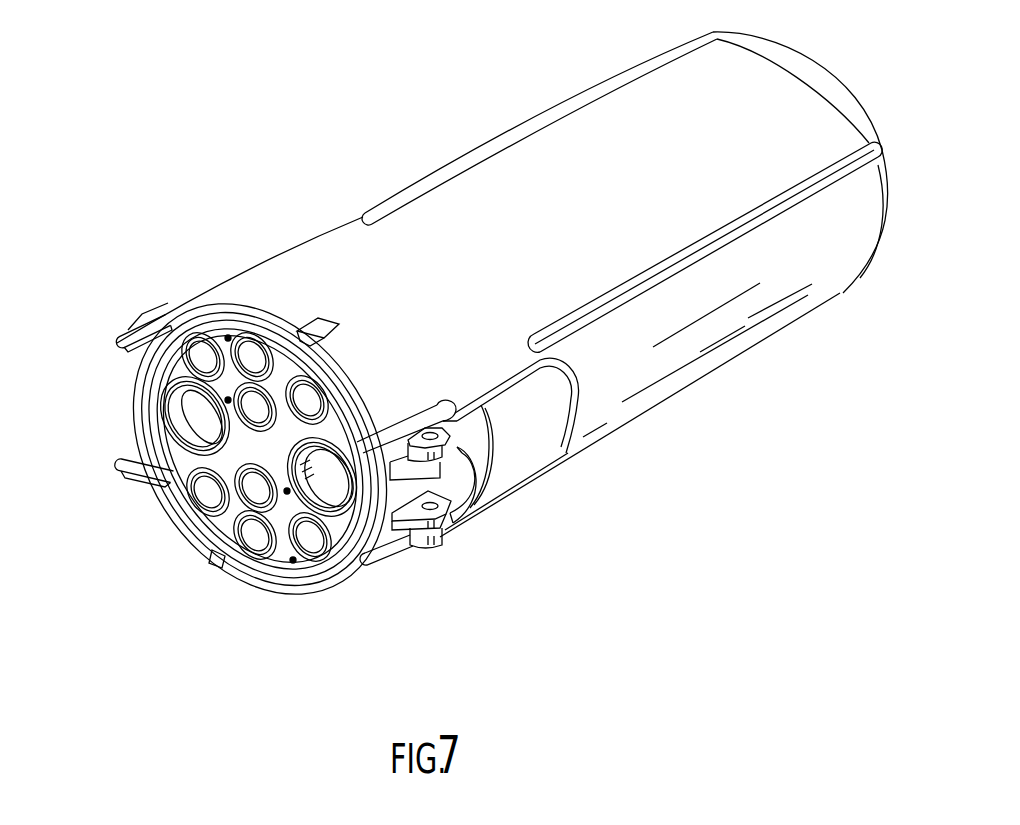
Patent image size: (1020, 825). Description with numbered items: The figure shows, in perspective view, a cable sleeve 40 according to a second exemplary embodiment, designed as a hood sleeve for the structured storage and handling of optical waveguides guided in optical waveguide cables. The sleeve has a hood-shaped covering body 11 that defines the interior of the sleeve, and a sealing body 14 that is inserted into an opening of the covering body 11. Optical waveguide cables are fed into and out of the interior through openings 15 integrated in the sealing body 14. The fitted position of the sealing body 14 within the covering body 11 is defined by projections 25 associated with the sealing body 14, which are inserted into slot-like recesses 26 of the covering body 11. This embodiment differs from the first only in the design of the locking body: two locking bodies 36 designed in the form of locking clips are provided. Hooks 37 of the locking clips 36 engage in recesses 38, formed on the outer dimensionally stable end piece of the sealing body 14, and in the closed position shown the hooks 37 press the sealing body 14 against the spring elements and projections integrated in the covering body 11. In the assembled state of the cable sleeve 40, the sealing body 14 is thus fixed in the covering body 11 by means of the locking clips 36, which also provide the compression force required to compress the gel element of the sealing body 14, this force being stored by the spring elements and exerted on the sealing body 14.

The covering body 11 is at (541, 148).
The sealing body 14 is at (160, 412).
The openings 15 is at (210, 232).
The projections 25 is at (307, 326).
The slot-like recesses 26 is at (329, 190).
The locking bodies 36 is at (128, 236).
The hooks 37 is at (118, 338).
The recesses 38 is at (150, 452).
The cable sleeve 40 is at (95, 582).